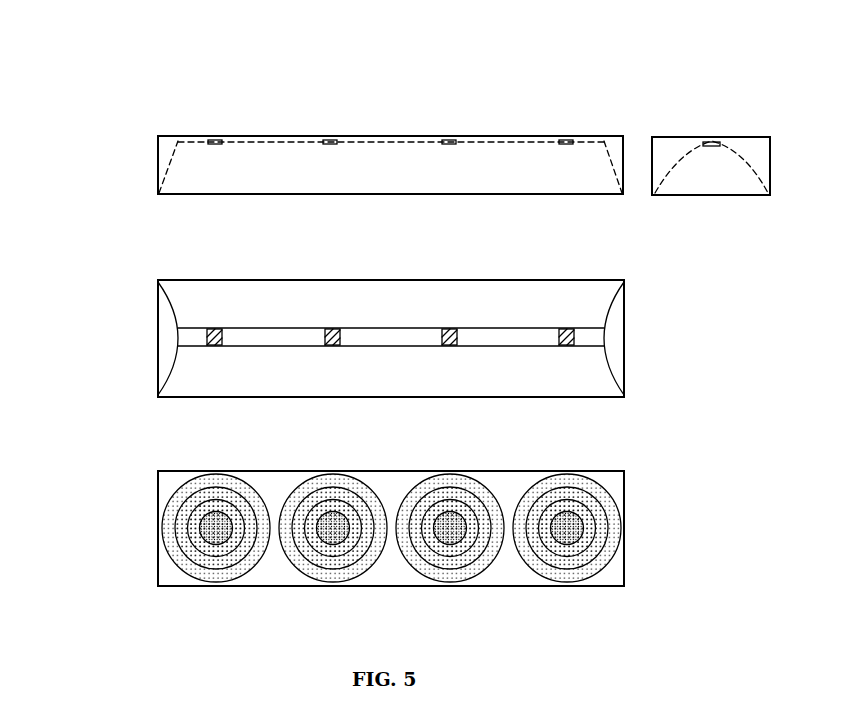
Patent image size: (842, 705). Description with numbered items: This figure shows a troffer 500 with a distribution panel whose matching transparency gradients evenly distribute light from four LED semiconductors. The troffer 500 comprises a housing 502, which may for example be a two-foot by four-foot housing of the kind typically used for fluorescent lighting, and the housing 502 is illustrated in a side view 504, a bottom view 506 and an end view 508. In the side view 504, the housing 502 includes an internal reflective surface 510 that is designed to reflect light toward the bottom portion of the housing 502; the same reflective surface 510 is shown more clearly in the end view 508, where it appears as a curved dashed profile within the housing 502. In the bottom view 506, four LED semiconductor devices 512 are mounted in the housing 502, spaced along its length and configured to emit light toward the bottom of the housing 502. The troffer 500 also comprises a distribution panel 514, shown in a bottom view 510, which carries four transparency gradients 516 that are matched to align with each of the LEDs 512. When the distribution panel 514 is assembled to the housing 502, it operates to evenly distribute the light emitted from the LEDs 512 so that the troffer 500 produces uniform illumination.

The troffer 500 is at (176, 48).
The housing 502 is at (168, 137).
The side view 504 is at (97, 157).
The bottom view 506 is at (97, 320).
The end view 508 is at (720, 103).
The internal reflective surface 510 is at (294, 145).
The LED semiconductor devices 512 is at (443, 143).
The distribution panel 514 is at (175, 470).
The transparency gradients 516 is at (215, 530).